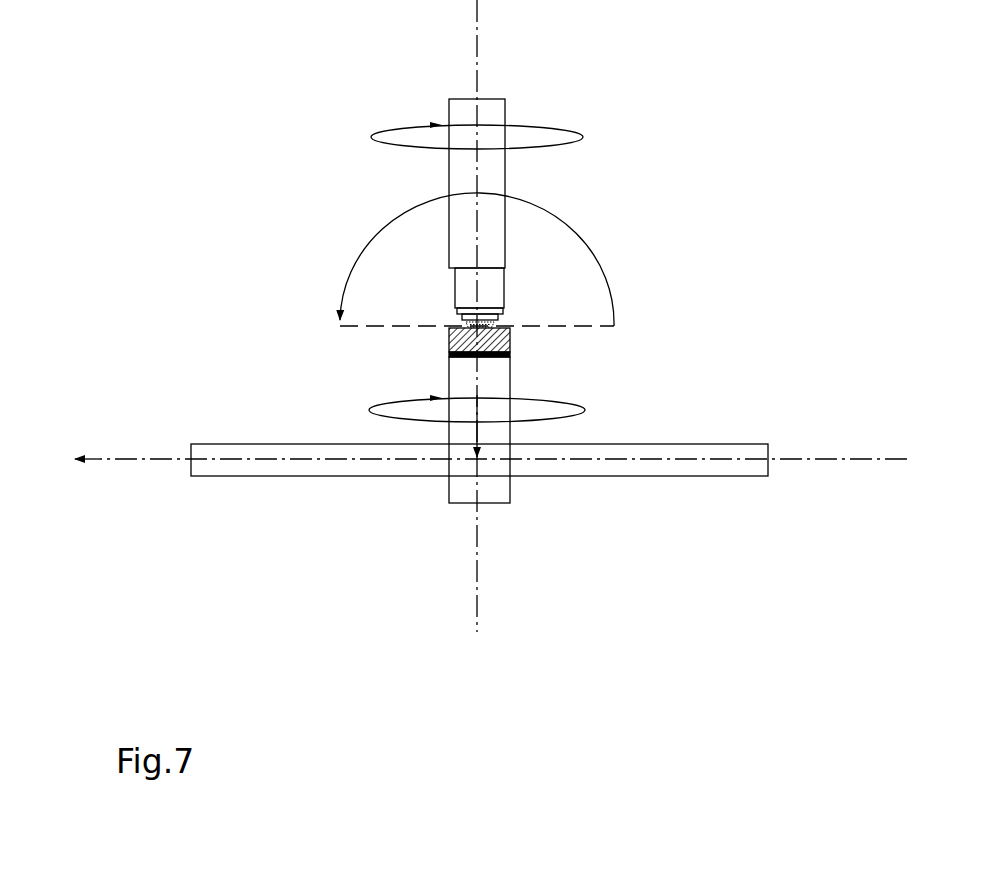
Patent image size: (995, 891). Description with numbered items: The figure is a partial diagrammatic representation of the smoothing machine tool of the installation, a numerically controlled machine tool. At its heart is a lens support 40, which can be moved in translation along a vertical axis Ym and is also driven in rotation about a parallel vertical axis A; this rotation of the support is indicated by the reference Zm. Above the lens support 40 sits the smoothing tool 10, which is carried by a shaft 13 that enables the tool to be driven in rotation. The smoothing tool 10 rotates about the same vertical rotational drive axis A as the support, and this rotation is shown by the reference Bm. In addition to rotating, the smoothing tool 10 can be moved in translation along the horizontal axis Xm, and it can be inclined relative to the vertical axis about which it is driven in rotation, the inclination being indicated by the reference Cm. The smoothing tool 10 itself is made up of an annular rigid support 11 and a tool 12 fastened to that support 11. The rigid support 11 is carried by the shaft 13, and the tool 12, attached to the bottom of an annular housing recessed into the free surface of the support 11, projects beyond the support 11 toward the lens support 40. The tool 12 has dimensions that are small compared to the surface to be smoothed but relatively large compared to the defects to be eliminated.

The smoothing tool 10 is at (476, 213).
The annular rigid support 11 is at (500, 320).
The tool 12 is at (458, 322).
The shaft 13 is at (492, 285).
The lens support 40 is at (510, 342).
The vertical rotational drive axis A is at (478, 11).
The rotation of the smoothing tool Bm is at (390, 128).
The inclination of the smoothing tool Cm is at (344, 283).
The rotation of the lens support Zm is at (390, 402).
The horizontal axis Xm is at (100, 458).
The vertical axis Ym is at (482, 432).